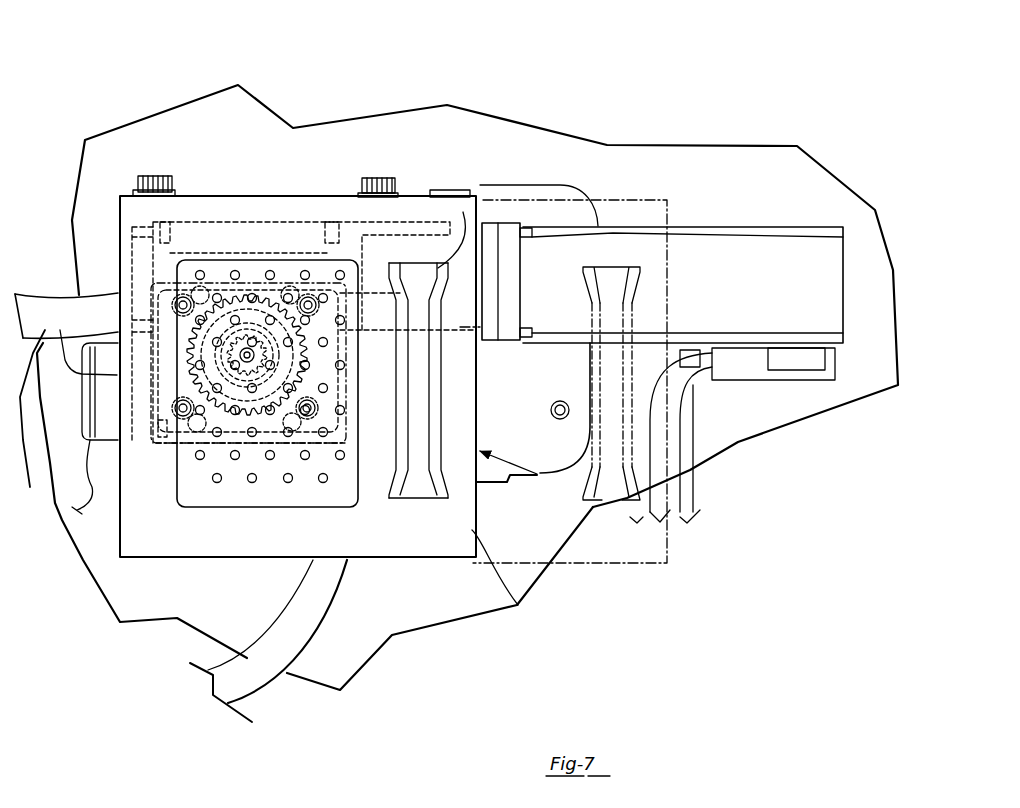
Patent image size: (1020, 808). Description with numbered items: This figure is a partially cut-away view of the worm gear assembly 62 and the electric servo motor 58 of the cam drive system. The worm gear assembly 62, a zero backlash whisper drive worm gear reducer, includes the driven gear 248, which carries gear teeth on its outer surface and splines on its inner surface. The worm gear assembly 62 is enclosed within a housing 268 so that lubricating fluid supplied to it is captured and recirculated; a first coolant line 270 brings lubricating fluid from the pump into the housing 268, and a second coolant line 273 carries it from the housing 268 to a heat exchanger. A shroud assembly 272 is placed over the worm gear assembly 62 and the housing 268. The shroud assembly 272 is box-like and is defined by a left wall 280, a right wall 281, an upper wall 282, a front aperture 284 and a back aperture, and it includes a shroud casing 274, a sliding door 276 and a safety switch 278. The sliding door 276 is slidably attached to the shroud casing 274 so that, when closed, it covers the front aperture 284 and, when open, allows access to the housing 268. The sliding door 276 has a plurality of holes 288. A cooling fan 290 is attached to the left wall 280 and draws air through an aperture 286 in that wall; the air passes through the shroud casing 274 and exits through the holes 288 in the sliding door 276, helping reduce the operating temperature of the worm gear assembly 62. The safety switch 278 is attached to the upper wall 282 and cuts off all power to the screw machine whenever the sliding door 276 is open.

The servo motor 58 is at (675, 267).
The worm gear assembly 62 is at (231, 210).
The driven gear 248 is at (270, 387).
The housing 268 is at (347, 379).
The first coolant line 270 is at (64, 423).
The shroud assembly 272 is at (318, 114).
The second coolant line 273 is at (263, 673).
The shroud casing 274 is at (178, 538).
The sliding door 276 is at (517, 605).
The safety switch 278 is at (456, 194).
The left wall 280 is at (114, 247).
The right wall 281 is at (563, 390).
The upper wall 282 is at (198, 190).
The front aperture 284 is at (281, 558).
The aperture 286 is at (50, 372).
The holes 288 is at (230, 482).
The cooling fan 290 is at (97, 417).